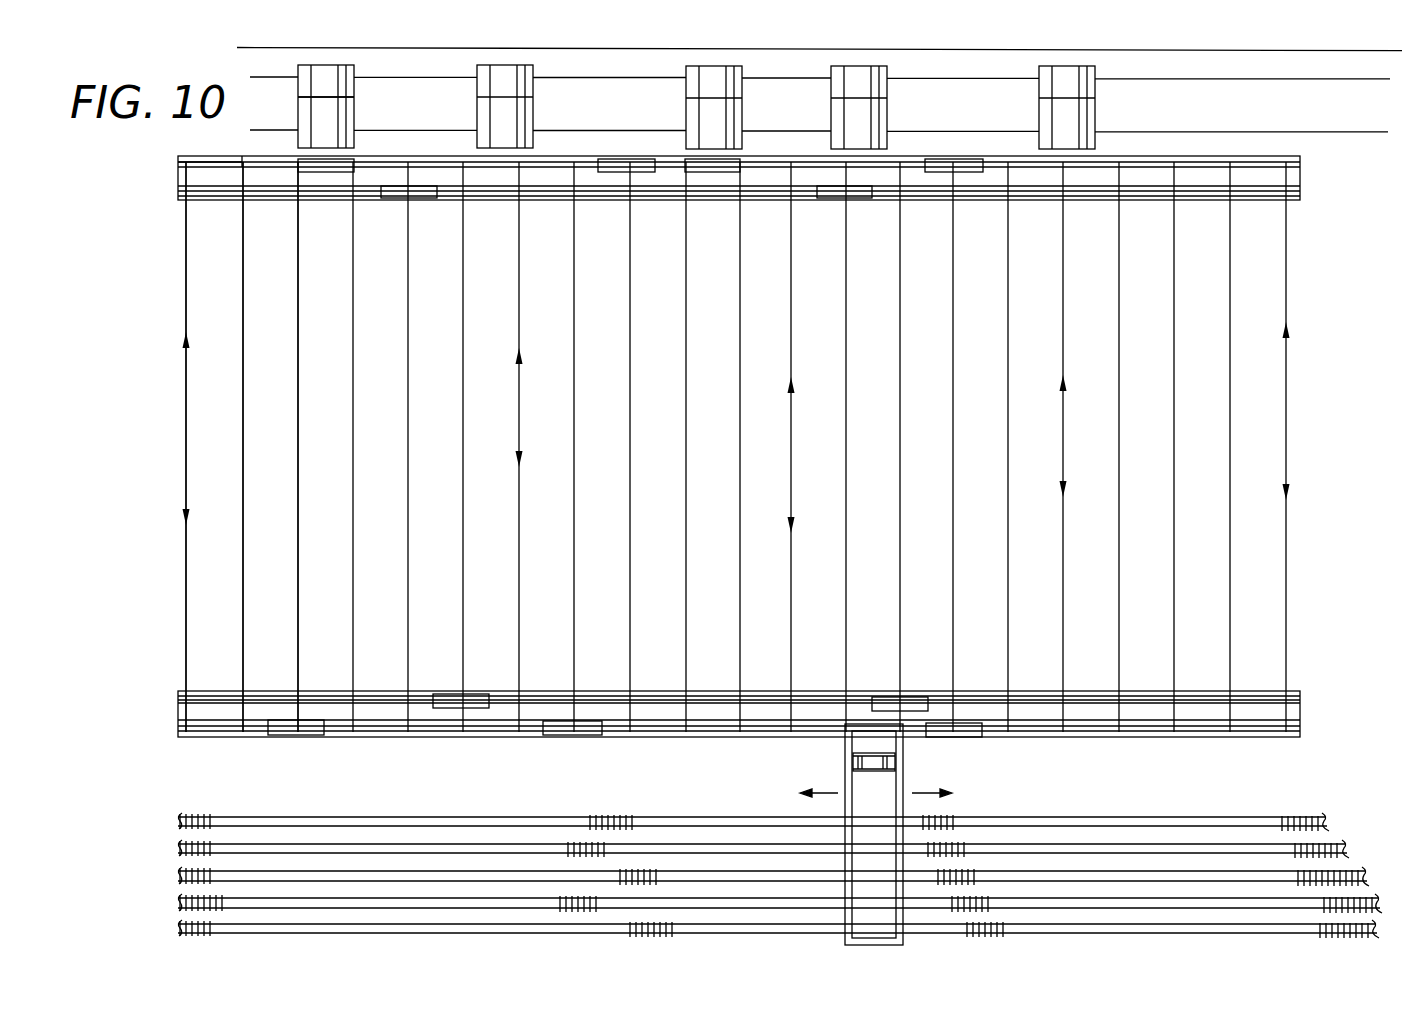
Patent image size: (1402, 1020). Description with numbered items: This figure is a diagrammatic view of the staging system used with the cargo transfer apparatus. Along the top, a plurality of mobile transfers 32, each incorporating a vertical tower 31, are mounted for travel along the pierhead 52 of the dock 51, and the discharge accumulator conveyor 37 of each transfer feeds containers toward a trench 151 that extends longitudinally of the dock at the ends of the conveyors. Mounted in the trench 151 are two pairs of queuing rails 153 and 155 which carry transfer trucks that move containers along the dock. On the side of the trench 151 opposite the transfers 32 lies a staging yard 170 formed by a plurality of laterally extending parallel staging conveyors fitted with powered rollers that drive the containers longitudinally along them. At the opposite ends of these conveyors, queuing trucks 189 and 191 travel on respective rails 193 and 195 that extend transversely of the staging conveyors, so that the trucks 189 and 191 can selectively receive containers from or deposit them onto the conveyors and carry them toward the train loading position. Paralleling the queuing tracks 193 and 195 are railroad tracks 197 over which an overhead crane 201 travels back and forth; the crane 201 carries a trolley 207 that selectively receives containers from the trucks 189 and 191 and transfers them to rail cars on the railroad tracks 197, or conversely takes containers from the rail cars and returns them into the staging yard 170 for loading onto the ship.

The vertical tower 31 is at (360, 66).
The mobile transfer 32 is at (362, 120).
The discharge accumulator conveyor 37 is at (302, 105).
The dock 51 is at (1222, 66).
The pierhead 52 is at (1152, 50).
The trench 151 is at (1297, 163).
The queuing rails 153 is at (257, 165).
The queuing rails 155 is at (262, 190).
The staging yard 170 is at (158, 292).
The queuing truck 189 is at (313, 735).
The queuing truck 191 is at (440, 694).
The rails 193 is at (700, 730).
The rails 195 is at (597, 700).
The railroad tracks 197 is at (480, 870).
The overhead crane 201 is at (920, 767).
The trolley 207 is at (853, 770).